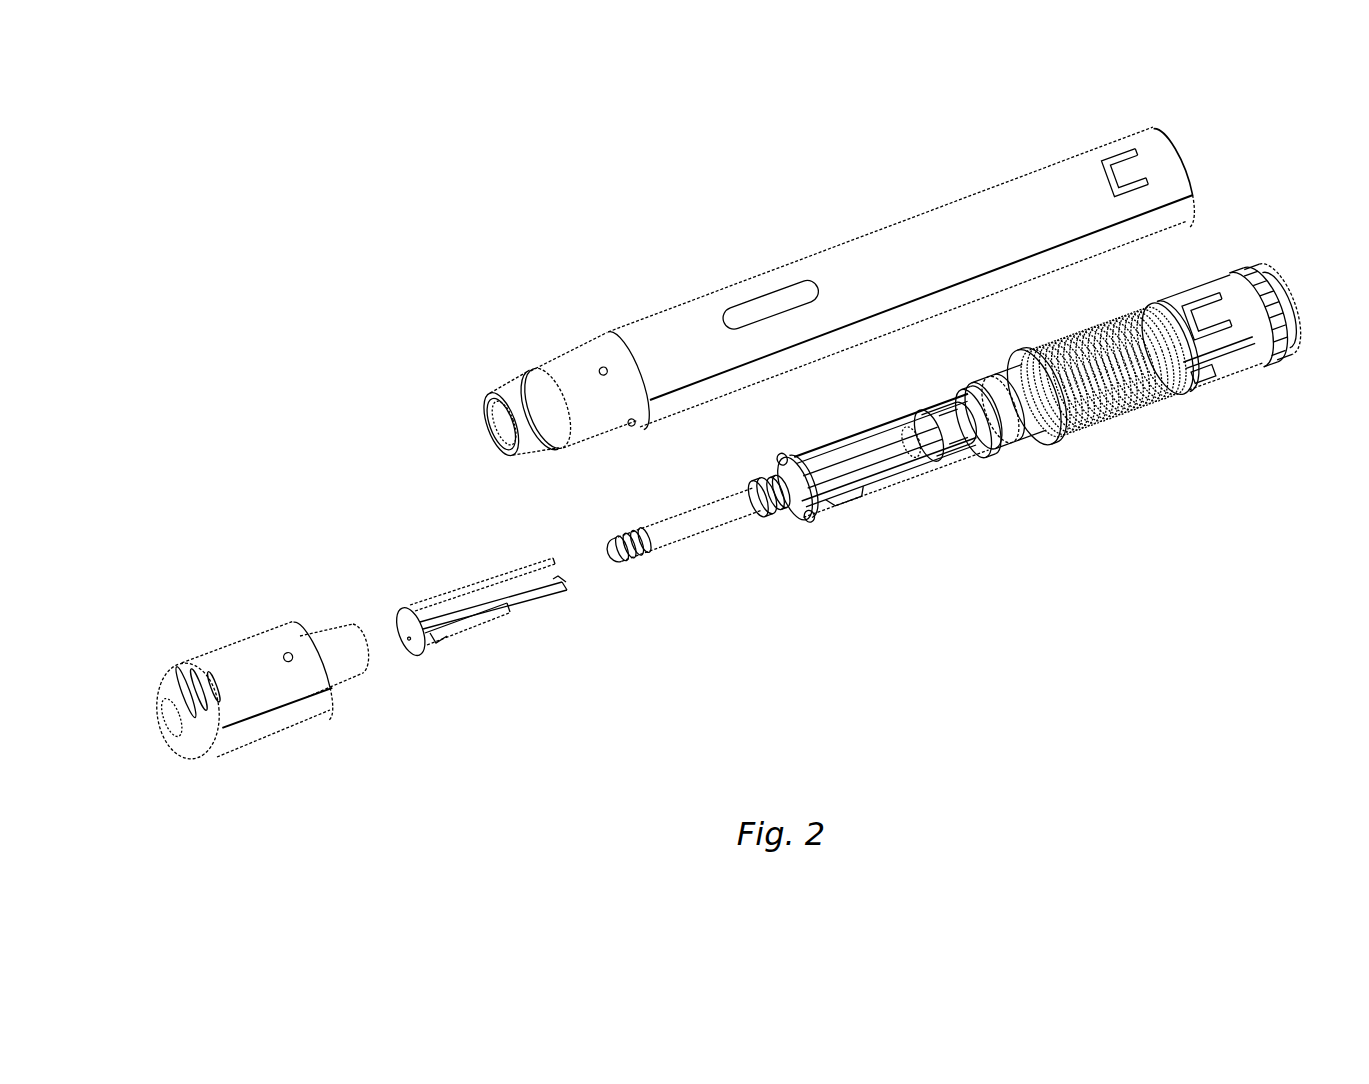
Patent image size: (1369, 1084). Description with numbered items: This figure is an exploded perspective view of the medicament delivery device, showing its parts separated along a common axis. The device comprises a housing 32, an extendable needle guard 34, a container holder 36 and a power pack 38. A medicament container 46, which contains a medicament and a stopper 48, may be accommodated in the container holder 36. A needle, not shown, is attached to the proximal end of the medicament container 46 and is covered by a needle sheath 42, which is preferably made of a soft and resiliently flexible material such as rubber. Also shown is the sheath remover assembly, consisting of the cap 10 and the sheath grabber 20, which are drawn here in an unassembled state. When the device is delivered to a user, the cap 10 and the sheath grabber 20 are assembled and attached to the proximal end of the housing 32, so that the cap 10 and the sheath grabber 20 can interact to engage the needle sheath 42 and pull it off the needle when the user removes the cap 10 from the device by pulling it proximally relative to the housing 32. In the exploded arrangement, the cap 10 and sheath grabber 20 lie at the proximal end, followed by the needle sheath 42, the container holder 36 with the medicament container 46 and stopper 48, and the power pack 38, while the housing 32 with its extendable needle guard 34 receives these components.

The cap 10 is at (316, 728).
The sheath grabber 20 is at (499, 631).
The housing 32 is at (658, 338).
The extendable needle guard 34 is at (517, 407).
The container holder 36 is at (833, 493).
The power pack 38 is at (1001, 472).
The needle sheath 42 is at (693, 528).
The medicament container 46 is at (870, 458).
The stopper 48 is at (923, 450).